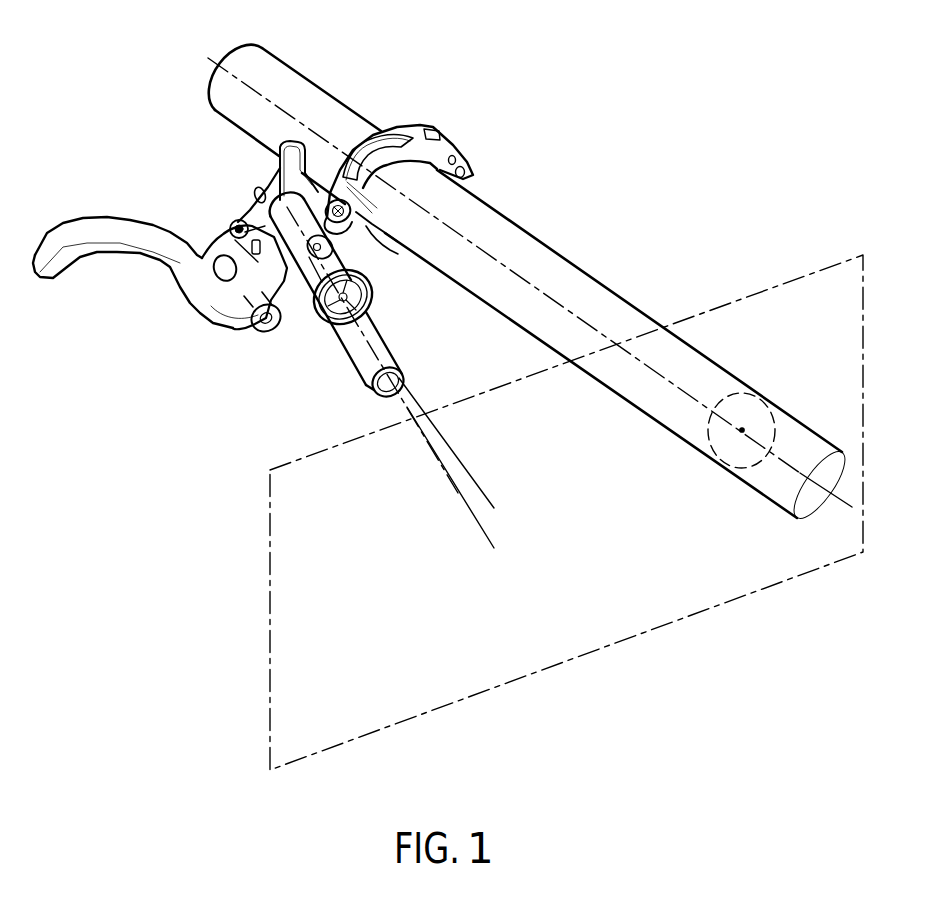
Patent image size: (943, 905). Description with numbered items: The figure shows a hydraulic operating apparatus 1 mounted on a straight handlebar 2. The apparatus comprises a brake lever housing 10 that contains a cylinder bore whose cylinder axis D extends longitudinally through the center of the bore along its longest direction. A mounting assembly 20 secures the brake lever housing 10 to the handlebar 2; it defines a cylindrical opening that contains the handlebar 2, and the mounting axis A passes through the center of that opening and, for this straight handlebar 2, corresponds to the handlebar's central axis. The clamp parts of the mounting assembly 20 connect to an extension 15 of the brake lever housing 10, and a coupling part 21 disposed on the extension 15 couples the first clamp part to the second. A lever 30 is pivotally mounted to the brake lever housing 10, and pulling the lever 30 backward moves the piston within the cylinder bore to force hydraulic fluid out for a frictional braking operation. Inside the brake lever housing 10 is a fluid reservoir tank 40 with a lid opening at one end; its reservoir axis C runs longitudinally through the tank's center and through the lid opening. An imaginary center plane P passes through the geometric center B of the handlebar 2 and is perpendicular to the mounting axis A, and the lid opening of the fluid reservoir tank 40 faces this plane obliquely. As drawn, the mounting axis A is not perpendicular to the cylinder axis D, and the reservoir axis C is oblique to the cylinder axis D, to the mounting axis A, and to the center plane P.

The hydraulic operating apparatus 1 is at (452, 51).
The handlebar 2 is at (328, 101).
The brake lever housing 10 is at (393, 358).
The extension 15 is at (375, 240).
The mounting assembly 20 is at (413, 110).
The coupling part 21 is at (280, 168).
The lever 30 is at (131, 255).
The fluid reservoir tank 40 is at (265, 226).
The mounting axis A is at (840, 501).
The geometric center of the handlebar B is at (740, 432).
The reservoir axis C is at (477, 477).
The cylinder axis D is at (477, 523).
The center plane P is at (767, 291).